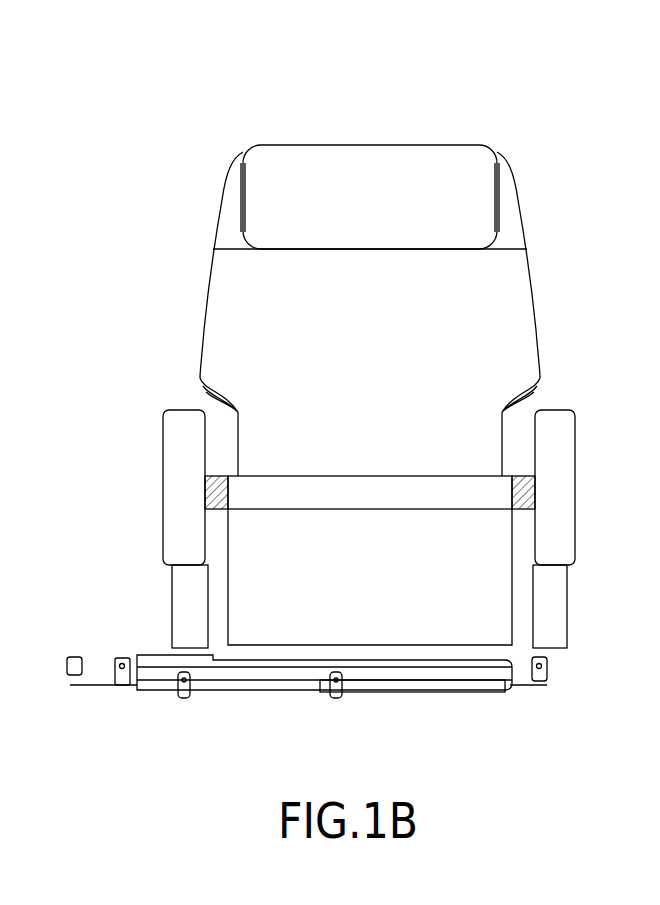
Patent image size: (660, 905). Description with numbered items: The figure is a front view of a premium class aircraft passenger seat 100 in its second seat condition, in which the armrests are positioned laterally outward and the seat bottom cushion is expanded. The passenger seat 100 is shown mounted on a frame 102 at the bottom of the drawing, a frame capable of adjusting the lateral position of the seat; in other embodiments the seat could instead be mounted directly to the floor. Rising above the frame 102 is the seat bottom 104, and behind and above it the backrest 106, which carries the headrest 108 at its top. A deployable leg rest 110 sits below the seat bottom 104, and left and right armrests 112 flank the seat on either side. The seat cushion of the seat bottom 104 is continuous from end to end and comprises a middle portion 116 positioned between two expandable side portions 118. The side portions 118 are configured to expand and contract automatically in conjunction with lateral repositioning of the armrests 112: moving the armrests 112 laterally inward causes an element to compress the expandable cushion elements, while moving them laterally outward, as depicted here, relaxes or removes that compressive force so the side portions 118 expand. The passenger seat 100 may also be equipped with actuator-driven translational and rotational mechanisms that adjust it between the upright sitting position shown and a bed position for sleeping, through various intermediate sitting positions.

The passenger seat 100 is at (372, 102).
The frame 102 is at (157, 682).
The seat bottom 104 is at (458, 490).
The backrest 106 is at (518, 297).
The headrest 108 is at (483, 176).
The deployable leg rest 110 is at (500, 622).
The armrests 112 is at (177, 442).
The middle portion 116 is at (367, 494).
The side portions 118 is at (218, 506).